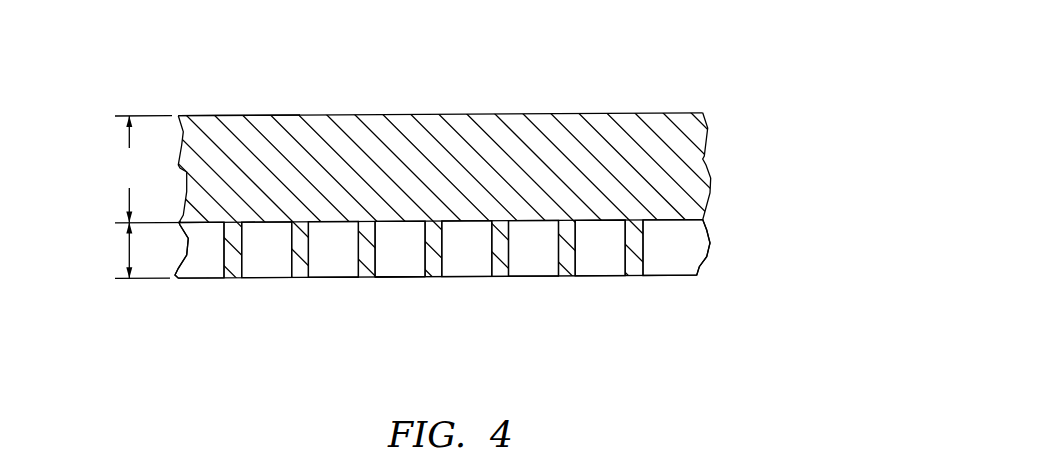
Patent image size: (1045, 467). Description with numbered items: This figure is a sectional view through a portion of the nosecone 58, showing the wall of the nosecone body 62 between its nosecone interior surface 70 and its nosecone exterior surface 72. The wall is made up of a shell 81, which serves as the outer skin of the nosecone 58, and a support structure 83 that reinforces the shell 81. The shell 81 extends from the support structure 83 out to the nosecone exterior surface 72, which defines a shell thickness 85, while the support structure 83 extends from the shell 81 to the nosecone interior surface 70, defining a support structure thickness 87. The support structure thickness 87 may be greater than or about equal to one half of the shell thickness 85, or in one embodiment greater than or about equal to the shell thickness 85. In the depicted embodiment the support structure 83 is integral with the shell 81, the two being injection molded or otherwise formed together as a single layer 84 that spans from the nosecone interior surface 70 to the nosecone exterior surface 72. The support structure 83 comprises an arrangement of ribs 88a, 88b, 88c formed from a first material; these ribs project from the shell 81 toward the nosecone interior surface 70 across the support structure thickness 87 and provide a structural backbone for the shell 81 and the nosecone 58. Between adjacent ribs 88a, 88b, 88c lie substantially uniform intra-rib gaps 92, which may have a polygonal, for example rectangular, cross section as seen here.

The layer 84 is at (183, 95).
The nosecone exterior surface 72 is at (230, 113).
The nosecone 58 is at (685, 88).
The nosecone body 62 is at (689, 85).
The shell 81 is at (710, 165).
The support structure 83 is at (712, 252).
The shell thickness 85 is at (132, 169).
The support structure thickness 87 is at (128, 252).
The intra-rib gaps 92 is at (204, 257).
The nosecone interior surface 70 is at (257, 280).
The rib 88a is at (363, 280).
The rib 88b is at (430, 278).
The rib 88c is at (333, 280).